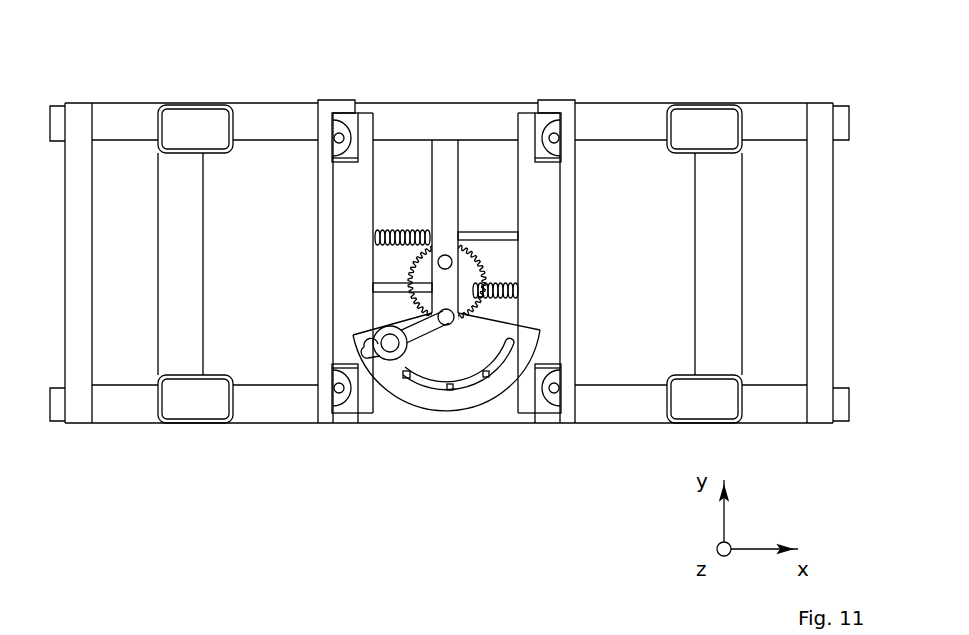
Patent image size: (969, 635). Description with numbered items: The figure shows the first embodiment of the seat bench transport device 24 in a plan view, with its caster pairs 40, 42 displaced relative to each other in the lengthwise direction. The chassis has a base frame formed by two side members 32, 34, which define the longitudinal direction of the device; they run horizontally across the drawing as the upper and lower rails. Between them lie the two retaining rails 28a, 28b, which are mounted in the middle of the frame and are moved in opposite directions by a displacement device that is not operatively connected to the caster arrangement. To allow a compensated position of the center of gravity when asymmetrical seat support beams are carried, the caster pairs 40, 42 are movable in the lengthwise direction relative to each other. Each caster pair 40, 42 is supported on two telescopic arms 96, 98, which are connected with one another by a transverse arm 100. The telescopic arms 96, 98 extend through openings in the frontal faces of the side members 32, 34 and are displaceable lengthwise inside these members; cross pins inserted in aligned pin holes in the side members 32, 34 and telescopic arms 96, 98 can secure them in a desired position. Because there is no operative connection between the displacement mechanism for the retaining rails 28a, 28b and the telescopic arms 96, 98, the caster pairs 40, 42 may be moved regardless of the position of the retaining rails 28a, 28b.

The seat bench transport device 24 is at (68, 16).
The telescopic arm 96 is at (135, 122).
The side member 32 is at (640, 120).
The telescopic arm 98 is at (126, 412).
The side member 34 is at (638, 407).
The transverse arm 100 is at (78, 277).
The caster pair 40 is at (58, 407).
The caster pair 42 is at (843, 403).
The retaining rail 28a is at (328, 115).
The retaining rail 28b is at (568, 117).